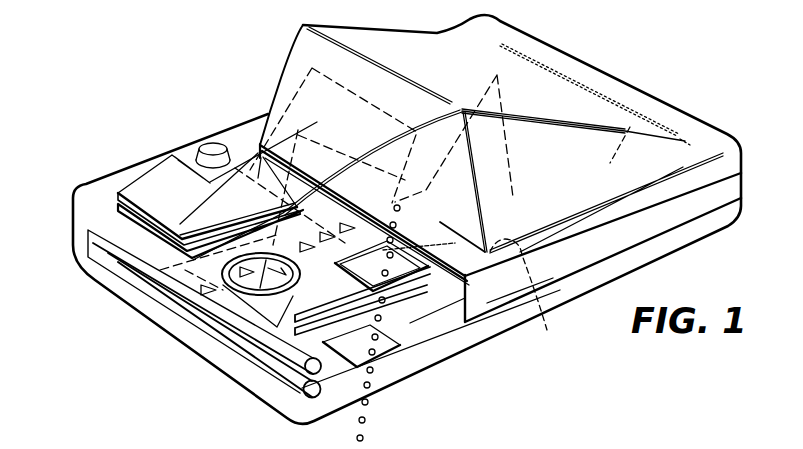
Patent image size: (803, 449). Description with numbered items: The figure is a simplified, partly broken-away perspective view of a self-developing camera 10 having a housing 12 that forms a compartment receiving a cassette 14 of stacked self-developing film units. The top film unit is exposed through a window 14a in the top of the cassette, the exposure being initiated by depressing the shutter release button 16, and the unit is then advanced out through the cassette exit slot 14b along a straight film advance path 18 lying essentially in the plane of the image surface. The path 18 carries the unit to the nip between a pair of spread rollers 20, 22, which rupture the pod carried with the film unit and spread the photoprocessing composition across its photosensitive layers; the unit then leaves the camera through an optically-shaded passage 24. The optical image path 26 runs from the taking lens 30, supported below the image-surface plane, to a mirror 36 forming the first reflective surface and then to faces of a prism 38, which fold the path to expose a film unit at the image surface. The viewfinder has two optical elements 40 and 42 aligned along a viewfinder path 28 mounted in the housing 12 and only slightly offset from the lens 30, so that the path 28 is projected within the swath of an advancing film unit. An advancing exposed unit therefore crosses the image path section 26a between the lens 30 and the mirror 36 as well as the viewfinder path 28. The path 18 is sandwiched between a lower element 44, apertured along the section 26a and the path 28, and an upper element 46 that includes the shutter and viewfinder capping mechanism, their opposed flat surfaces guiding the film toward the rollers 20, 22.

The self-developing camera 10 is at (620, 76).
The housing 12 is at (120, 173).
The cassette 14 is at (488, 303).
The window 14a is at (540, 316).
The cassette exit slot 14b is at (270, 143).
The shutter release button 16 is at (213, 143).
The film advance path 18 is at (197, 274).
The spread roller 20 is at (302, 371).
The spread roller 22 is at (298, 384).
The optically-shaded passage 24 is at (200, 343).
The optical image path 26 is at (507, 101).
The image path section 26a is at (160, 270).
The viewfinder path 28 is at (367, 420).
The taking lens 30 is at (289, 301).
The mirror 36 is at (347, 88).
The prism 38 is at (630, 127).
The viewfinder optical element 40 is at (395, 258).
The viewfinder optical element 42 is at (383, 343).
The lower element 44 is at (116, 206).
The upper element 46 is at (118, 190).